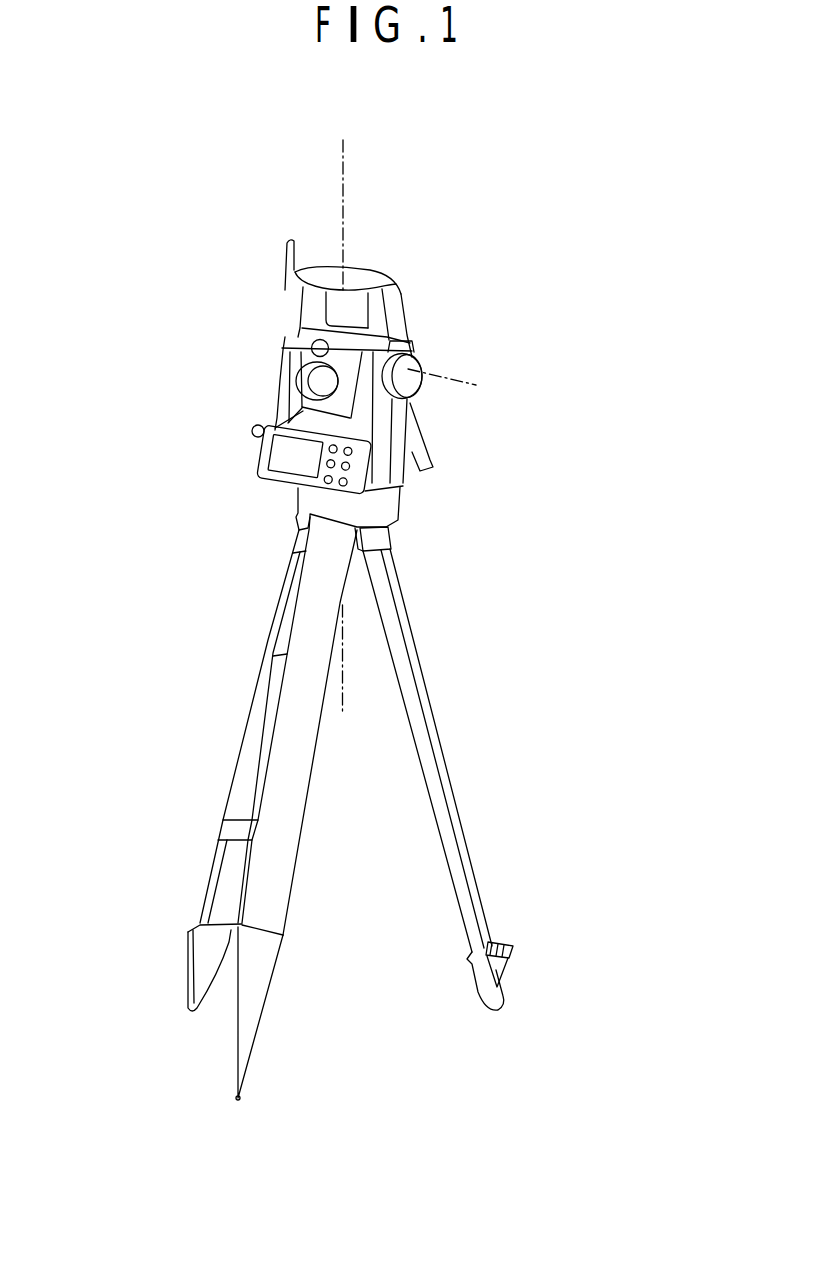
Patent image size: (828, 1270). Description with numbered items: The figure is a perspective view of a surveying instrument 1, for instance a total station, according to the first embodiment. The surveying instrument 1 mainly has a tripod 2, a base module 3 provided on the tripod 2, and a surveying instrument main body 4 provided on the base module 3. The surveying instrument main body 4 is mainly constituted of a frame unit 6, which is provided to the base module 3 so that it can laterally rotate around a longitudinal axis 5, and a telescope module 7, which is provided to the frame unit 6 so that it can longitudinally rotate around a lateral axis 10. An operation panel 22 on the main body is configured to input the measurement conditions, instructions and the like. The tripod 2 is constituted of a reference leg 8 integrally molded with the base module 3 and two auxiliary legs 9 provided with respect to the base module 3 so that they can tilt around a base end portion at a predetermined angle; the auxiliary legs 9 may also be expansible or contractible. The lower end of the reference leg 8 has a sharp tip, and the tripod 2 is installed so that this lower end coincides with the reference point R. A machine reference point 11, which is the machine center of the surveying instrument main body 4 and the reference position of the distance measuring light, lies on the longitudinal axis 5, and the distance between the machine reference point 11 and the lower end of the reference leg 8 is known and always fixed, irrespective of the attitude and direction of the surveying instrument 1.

The surveying instrument 1 is at (532, 572).
The tripod 2 is at (450, 717).
The base module 3 is at (400, 500).
The surveying instrument main body 4 is at (228, 423).
The longitudinal axis 5 is at (345, 177).
The frame unit 6 is at (418, 408).
The telescope module 7 is at (300, 356).
The reference leg 8 is at (305, 800).
The auxiliary legs 9 is at (468, 850).
The lateral axis 10 is at (442, 372).
The machine reference point 11 is at (345, 368).
The operation panel 22 is at (253, 468).